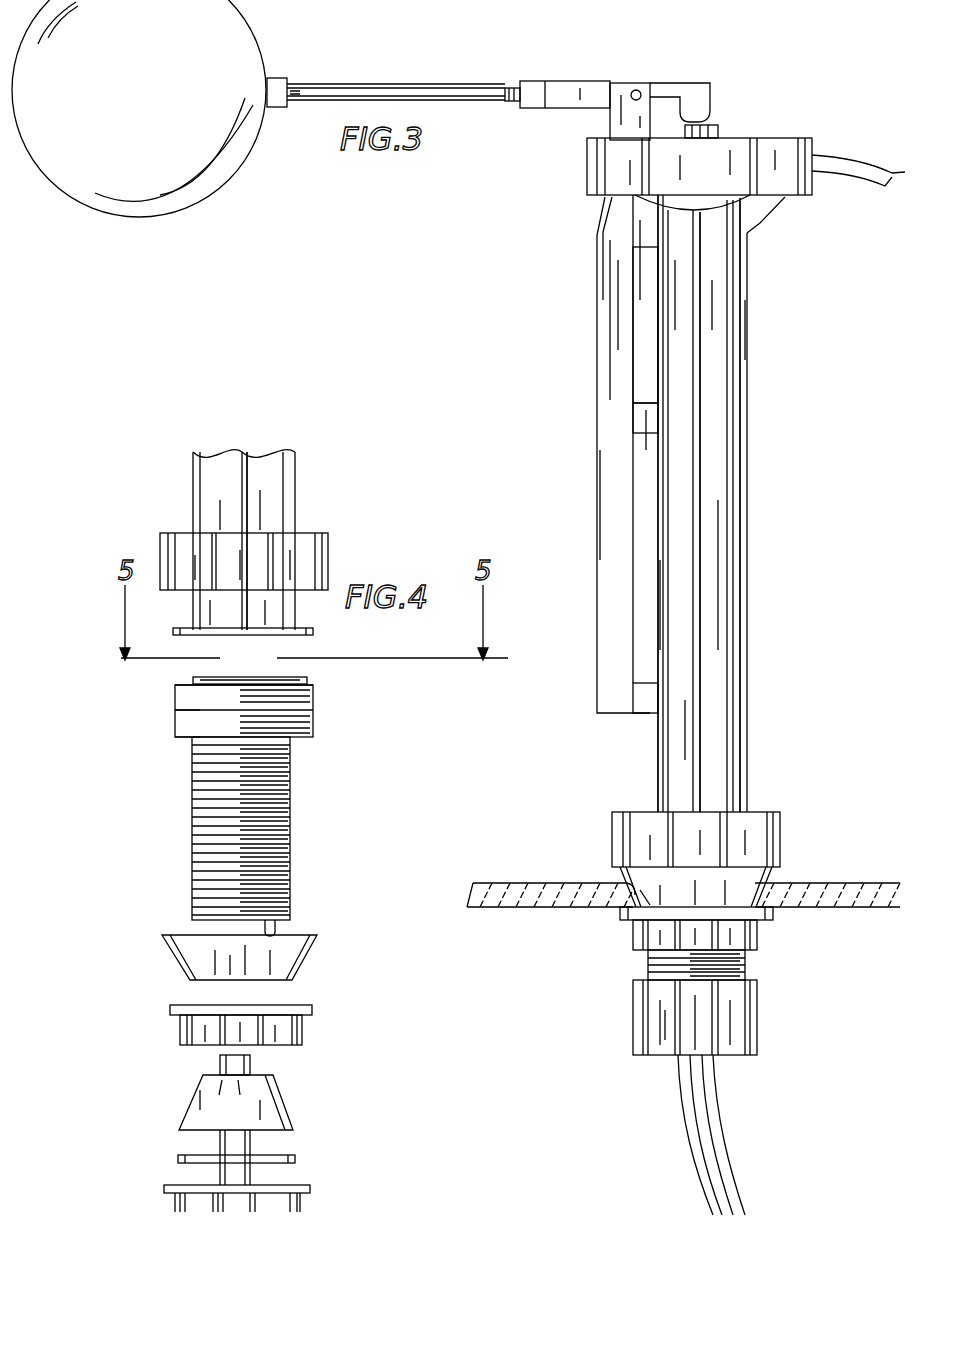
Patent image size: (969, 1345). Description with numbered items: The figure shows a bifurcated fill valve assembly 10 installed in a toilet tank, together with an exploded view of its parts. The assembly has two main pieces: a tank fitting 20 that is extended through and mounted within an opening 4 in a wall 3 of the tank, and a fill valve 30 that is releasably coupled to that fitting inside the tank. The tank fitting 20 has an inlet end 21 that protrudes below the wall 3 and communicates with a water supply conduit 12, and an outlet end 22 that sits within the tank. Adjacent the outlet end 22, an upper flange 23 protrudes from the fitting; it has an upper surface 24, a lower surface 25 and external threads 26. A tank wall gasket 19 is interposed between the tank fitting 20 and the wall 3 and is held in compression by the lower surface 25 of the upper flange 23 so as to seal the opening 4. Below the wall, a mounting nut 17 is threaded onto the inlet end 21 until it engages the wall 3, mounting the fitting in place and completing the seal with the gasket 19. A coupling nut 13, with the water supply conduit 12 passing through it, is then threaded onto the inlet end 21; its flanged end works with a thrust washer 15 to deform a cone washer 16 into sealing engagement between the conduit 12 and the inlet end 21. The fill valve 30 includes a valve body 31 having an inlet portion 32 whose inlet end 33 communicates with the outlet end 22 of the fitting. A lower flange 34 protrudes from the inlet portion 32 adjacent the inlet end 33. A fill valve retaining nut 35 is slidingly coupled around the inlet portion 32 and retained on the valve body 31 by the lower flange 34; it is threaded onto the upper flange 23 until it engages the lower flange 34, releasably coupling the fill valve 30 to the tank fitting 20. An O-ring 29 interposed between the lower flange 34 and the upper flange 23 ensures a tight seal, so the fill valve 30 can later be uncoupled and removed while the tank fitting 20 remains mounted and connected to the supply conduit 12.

In FIG. 3, the wall 3 is at (500, 897).
In FIG. 3, the opening 4 is at (628, 915).
In FIG. 3, the bifurcated fill valve assembly 10 is at (763, 733).
In FIG. 3, the water supply conduit 12 is at (725, 1200).
In FIG. 3, the coupling nut 13 is at (745, 1030).
In FIG. 4, the coupling nut 13 is at (287, 1203).
In FIG. 4, the thrust washer 15 is at (292, 1158).
In FIG. 4, the cone washer 16 is at (272, 1100).
In FIG. 3, the mounting nut 17 is at (748, 935).
In FIG. 4, the mounting nut 17 is at (282, 1030).
In FIG. 3, the tank wall gasket 19 is at (740, 885).
In FIG. 4, the tank wall gasket 19 is at (288, 952).
In FIG. 3, the tank fitting 20 is at (763, 961).
In FIG. 4, the tank fitting 20 is at (298, 790).
In FIG. 4, the inlet end 21 is at (268, 935).
In FIG. 4, the outlet end 22 is at (300, 677).
In FIG. 4, the upper flange 23 is at (305, 714).
In FIG. 4, the upper surface 24 is at (185, 676).
In FIG. 4, the lower surface 25 is at (185, 738).
In FIG. 4, the external threads 26 is at (178, 708).
In FIG. 4, the O-ring 29 is at (250, 672).
In FIG. 3, the fill valve 30 is at (768, 353).
In FIG. 3, the valve body 31 is at (742, 522).
In FIG. 4, the valve body 31 is at (299, 467).
In FIG. 3, the inlet portion 32 is at (714, 693).
In FIG. 4, the inlet portion 32 is at (270, 520).
In FIG. 4, the inlet end 33 is at (200, 635).
In FIG. 4, the lower flange 34 is at (310, 632).
In FIG. 3, the fill valve retaining nut 35 is at (778, 821).
In FIG. 4, the fill valve retaining nut 35 is at (324, 559).